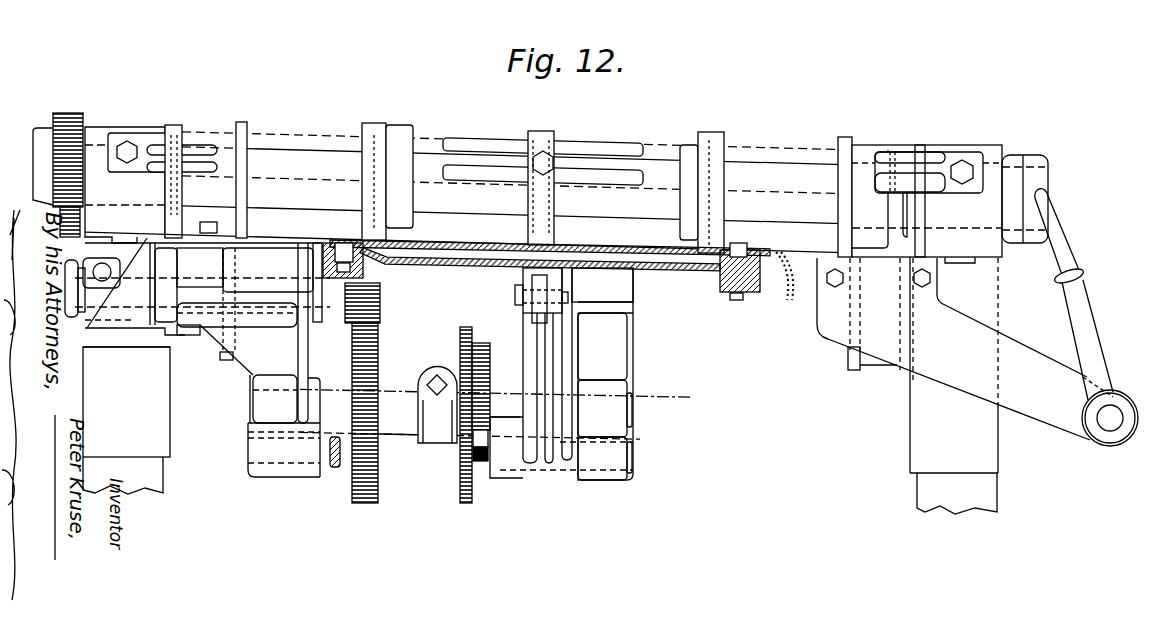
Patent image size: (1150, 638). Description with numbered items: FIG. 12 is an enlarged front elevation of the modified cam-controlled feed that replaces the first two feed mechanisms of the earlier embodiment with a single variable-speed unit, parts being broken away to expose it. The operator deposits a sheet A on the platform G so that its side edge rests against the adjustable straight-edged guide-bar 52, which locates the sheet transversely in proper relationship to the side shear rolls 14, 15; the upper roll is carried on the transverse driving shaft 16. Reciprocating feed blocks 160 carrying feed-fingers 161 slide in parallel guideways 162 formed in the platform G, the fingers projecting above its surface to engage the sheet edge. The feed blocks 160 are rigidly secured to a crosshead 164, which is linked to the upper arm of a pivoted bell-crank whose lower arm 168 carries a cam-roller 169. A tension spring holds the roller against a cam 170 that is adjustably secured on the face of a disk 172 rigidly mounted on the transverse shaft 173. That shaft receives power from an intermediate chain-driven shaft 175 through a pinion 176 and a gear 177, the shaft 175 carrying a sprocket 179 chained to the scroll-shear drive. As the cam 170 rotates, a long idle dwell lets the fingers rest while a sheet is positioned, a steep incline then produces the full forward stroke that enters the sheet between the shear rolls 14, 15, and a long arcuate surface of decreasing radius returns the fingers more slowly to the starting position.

The side shear roll 14 is at (247, 128).
The side shear roll 15 is at (850, 372).
The transverse driving shaft 16 is at (532, 175).
The guide-bar 52 is at (247, 228).
The feed block 160 is at (770, 285).
The feed-finger 161 is at (747, 250).
The guideway 162 is at (370, 262).
The crosshead 164 is at (460, 263).
The lower arm of bell-crank 168 is at (507, 418).
The cam-roller 169 is at (482, 465).
The cam 170 is at (480, 343).
The disk 172 is at (468, 470).
The transverse shaft 173 is at (395, 420).
The intermediate chain-driven shaft 175 is at (170, 280).
The pinion 176 is at (372, 300).
The gear 177 is at (363, 506).
The sprocket 179 is at (68, 320).
The sheet A is at (478, 241).
The platform G is at (612, 237).